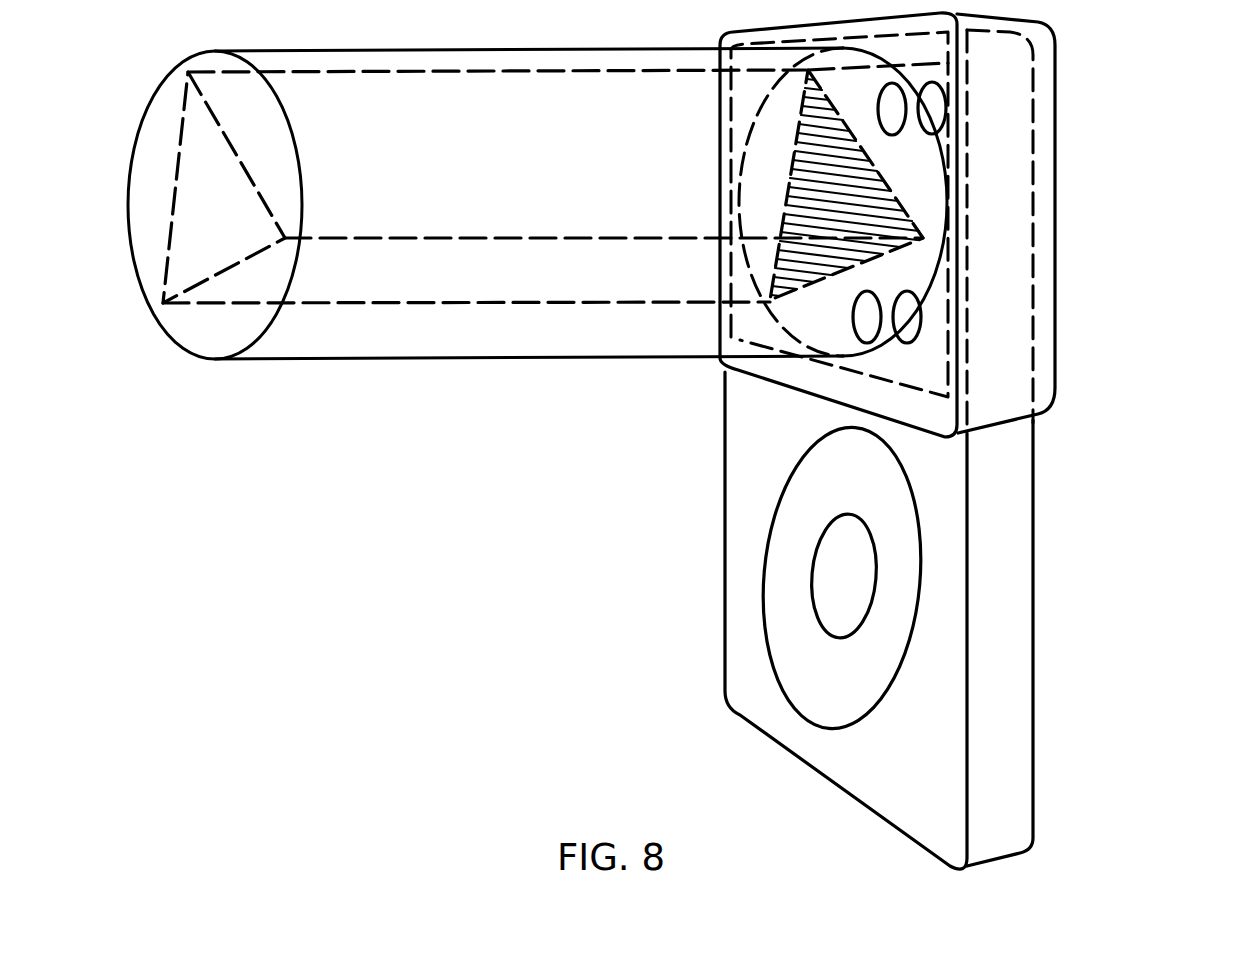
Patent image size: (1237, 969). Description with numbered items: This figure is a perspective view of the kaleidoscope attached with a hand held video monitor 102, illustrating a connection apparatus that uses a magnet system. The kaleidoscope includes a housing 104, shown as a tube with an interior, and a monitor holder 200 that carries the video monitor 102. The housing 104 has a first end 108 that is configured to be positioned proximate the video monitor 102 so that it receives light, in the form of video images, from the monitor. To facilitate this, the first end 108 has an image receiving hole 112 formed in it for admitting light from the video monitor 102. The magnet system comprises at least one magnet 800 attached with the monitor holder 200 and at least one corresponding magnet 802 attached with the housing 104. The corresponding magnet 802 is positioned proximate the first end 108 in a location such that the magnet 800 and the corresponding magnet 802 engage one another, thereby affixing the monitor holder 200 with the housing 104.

The video monitor 102 is at (790, 192).
The housing 104 is at (437, 360).
The first end 108 is at (933, 280).
The image receiving hole 112 is at (897, 208).
The monitor holder 200 is at (1055, 47).
The magnet 800 is at (917, 333).
The corresponding magnet 802 is at (853, 323).